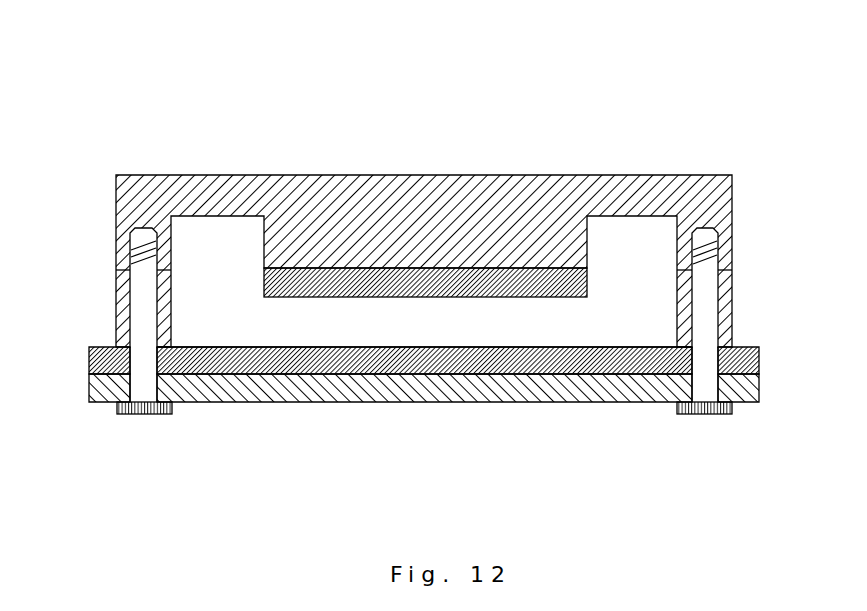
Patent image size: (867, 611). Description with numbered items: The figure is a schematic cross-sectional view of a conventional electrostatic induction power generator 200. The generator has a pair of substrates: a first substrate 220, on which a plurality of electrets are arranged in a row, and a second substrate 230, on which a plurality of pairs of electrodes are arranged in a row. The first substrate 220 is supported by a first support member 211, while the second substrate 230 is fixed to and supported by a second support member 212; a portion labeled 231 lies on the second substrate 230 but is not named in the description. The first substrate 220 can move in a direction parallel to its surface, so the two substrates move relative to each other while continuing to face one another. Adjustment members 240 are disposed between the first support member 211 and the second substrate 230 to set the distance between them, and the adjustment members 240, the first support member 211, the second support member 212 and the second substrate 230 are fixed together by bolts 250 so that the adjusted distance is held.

The electrostatic induction power generator 200 is at (434, 263).
The first support member 211 is at (343, 193).
The second support member 212 is at (332, 387).
The first substrate 220 is at (263, 283).
The second substrate 230 is at (745, 349).
The mounting surface of base plate 231 is at (614, 347).
The adjustment members 240 is at (116, 305).
The bolts 250 is at (145, 387).